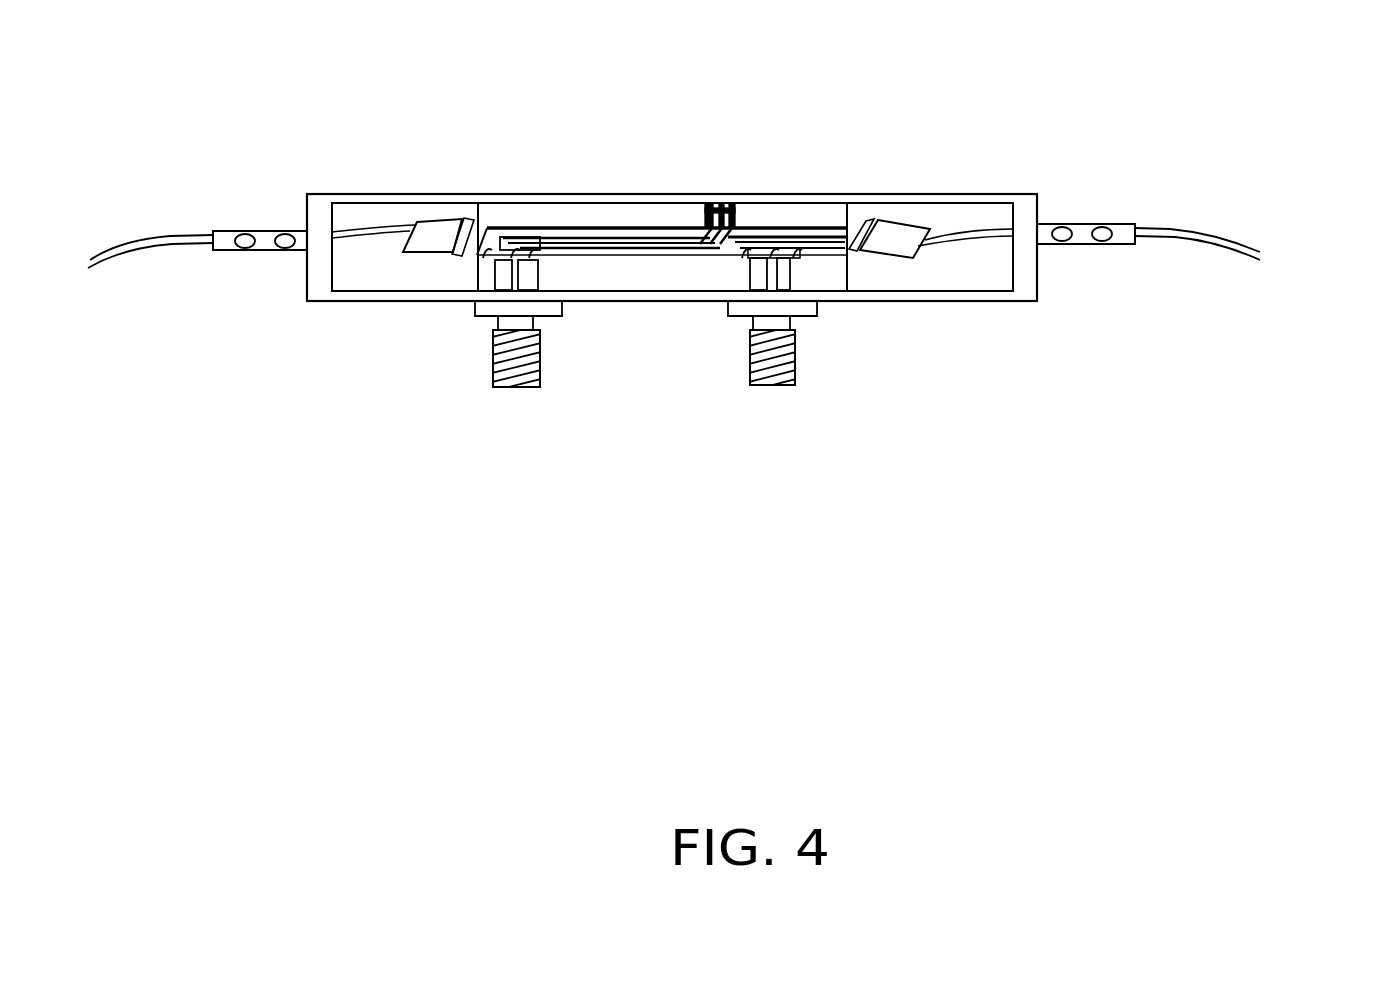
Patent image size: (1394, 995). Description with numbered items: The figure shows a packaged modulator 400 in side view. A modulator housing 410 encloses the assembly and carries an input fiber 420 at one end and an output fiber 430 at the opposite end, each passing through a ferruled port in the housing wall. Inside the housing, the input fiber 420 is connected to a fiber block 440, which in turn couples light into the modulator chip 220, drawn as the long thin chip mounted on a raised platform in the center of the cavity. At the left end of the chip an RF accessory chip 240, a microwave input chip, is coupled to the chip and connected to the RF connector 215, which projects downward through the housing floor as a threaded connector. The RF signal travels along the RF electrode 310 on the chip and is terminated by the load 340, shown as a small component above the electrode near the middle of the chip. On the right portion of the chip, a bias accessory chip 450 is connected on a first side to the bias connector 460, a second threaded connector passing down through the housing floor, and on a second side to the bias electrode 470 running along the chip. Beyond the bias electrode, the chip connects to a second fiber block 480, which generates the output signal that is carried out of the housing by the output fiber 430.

The packaged modulator 400 is at (284, 775).
The modulator housing 410 is at (652, 192).
The input fiber 420 is at (197, 207).
The output fiber 430 is at (1183, 222).
The fiber block 440 is at (428, 232).
The fiber block 480 is at (905, 237).
The modulator chip 220 is at (465, 253).
The RF electrode 310 is at (612, 236).
The load 340 is at (738, 205).
The accessory chip 240 is at (497, 288).
The RF connector 215 is at (545, 362).
The bias connector 460 is at (800, 362).
The bias electrode 470 is at (872, 257).
The bias accessory chip 450 is at (787, 277).